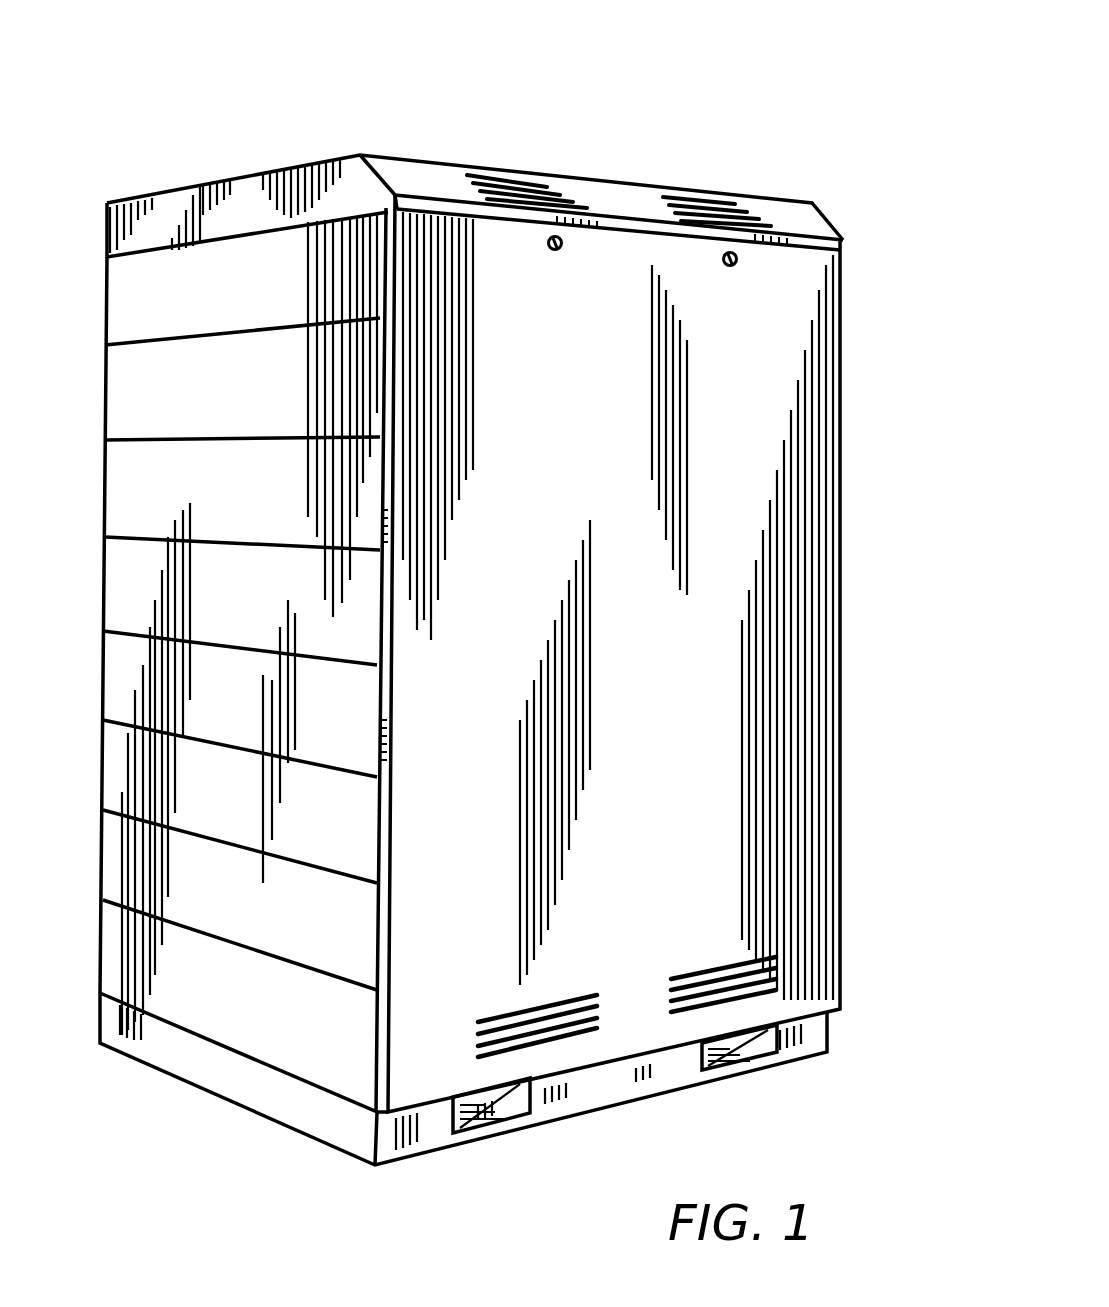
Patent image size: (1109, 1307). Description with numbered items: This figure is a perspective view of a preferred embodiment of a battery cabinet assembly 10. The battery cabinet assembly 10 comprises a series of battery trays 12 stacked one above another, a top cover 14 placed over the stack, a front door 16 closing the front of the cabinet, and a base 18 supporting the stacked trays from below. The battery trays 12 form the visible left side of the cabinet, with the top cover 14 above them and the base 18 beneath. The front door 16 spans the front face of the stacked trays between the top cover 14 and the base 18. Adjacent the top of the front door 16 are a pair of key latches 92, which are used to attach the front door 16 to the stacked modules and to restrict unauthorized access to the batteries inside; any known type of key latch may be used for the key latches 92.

The battery cabinet assembly 10 is at (692, 108).
The battery trays 12 is at (118, 401).
The top cover 14 is at (503, 172).
The front door 16 is at (807, 368).
The base 18 is at (253, 1093).
The key latches 92 is at (555, 236).